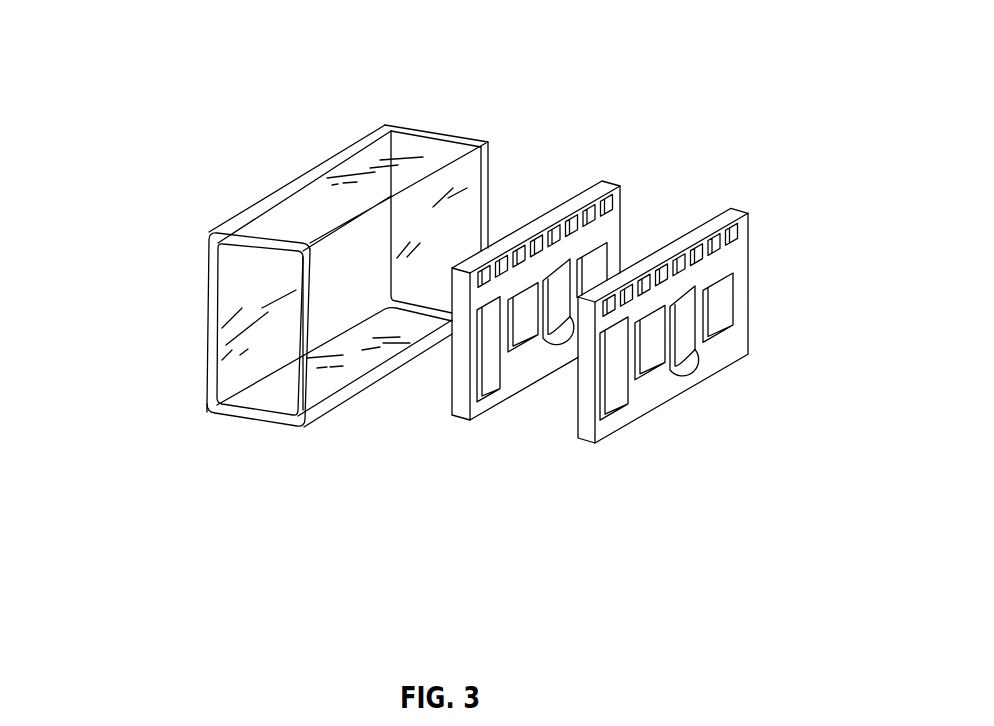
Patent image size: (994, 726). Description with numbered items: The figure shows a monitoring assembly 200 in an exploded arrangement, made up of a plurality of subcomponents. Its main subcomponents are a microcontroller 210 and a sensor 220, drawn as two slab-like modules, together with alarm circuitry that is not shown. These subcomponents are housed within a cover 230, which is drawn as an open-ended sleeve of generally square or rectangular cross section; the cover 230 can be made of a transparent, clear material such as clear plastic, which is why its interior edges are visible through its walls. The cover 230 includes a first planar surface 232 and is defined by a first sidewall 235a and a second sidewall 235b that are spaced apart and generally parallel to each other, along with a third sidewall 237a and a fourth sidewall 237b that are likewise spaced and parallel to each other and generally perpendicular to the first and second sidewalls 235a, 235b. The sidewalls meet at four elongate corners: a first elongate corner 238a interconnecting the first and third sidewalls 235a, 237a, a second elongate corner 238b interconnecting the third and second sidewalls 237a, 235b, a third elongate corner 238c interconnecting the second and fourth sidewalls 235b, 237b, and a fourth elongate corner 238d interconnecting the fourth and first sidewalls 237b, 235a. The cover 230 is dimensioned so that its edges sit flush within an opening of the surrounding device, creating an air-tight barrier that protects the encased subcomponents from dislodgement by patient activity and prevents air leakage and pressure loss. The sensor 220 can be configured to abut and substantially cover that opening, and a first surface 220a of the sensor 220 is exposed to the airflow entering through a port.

The monitoring assembly 200 is at (436, 351).
The microcontroller 210 is at (625, 223).
The sensor 220 is at (721, 327).
The first surface of the sensor 220a is at (680, 333).
The cover 230 is at (324, 338).
The first planar surface 232 is at (318, 307).
The first sidewall 235a is at (322, 193).
The second sidewall 235b is at (387, 380).
The third sidewall 237a is at (250, 375).
The fourth sidewall 237b is at (470, 221).
The first elongate corner 238a is at (213, 238).
The second elongate corner 238b is at (238, 417).
The third elongate corner 238c is at (420, 287).
The fourth elongate corner 238d is at (442, 145).